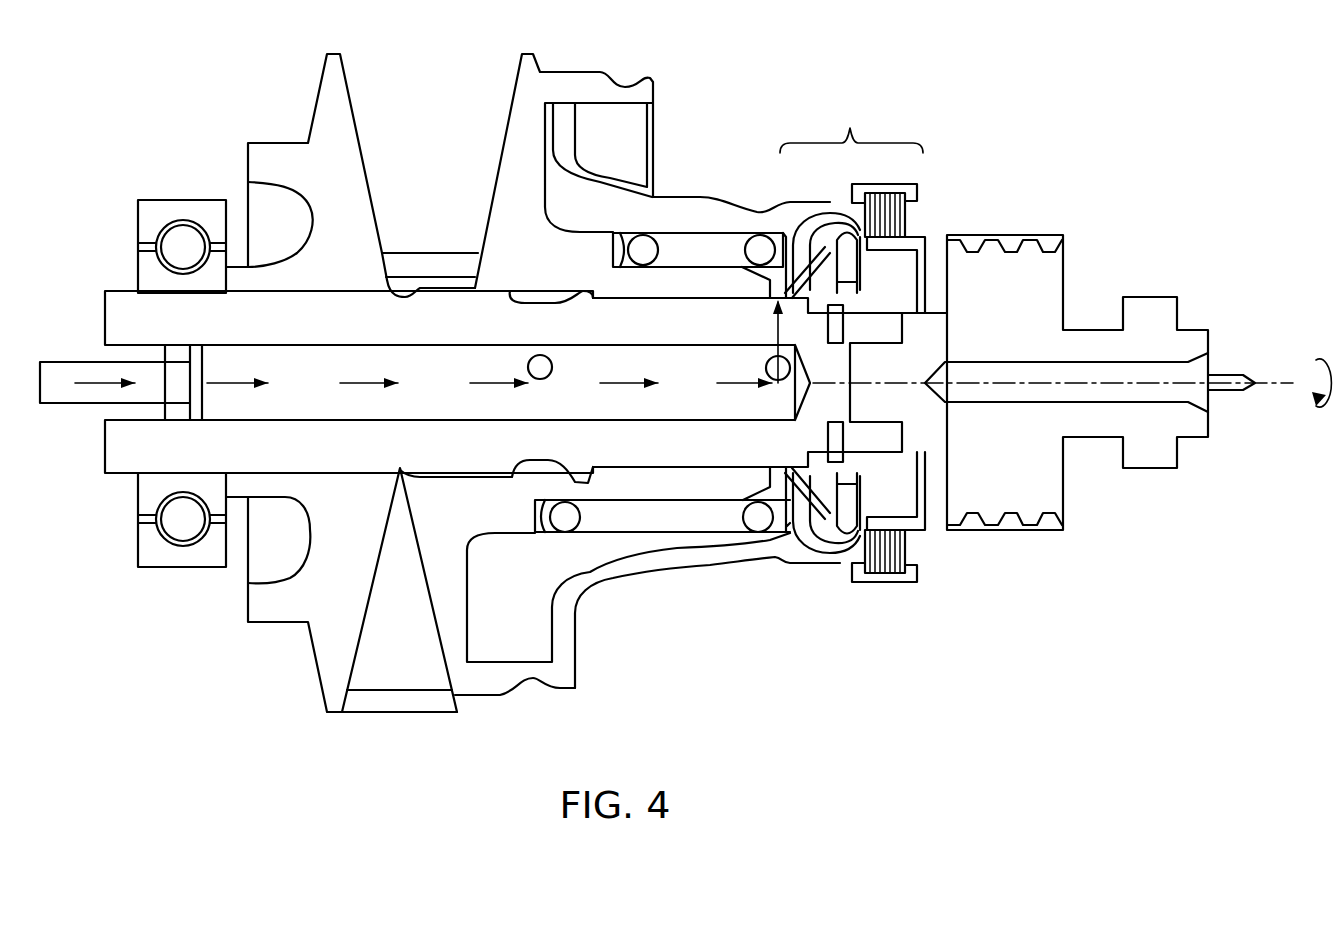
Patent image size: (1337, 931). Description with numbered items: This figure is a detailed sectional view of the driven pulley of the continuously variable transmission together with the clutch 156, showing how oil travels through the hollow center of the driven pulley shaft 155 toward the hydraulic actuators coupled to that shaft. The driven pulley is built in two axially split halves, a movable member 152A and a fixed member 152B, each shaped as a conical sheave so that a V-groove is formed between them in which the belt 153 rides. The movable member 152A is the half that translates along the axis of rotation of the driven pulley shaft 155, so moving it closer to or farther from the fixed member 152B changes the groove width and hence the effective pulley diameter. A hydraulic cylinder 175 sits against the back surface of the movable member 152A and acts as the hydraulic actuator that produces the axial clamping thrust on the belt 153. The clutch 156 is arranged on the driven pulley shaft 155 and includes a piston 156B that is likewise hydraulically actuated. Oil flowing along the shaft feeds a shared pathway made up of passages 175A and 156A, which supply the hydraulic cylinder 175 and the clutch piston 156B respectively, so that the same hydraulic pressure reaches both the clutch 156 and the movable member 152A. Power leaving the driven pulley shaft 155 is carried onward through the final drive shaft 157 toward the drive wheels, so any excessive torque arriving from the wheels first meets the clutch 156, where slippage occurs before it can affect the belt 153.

The movable member 152A is at (518, 125).
The fixed member 152B is at (337, 147).
The belt 153 is at (428, 253).
The driven pulley shaft 155 is at (260, 358).
The clutch 156 is at (791, 337).
The passage 156A is at (785, 293).
The piston 156B is at (927, 233).
The final drive shaft 157 is at (1043, 287).
The hydraulic cylinder 175 is at (675, 247).
The passage 175A is at (780, 273).